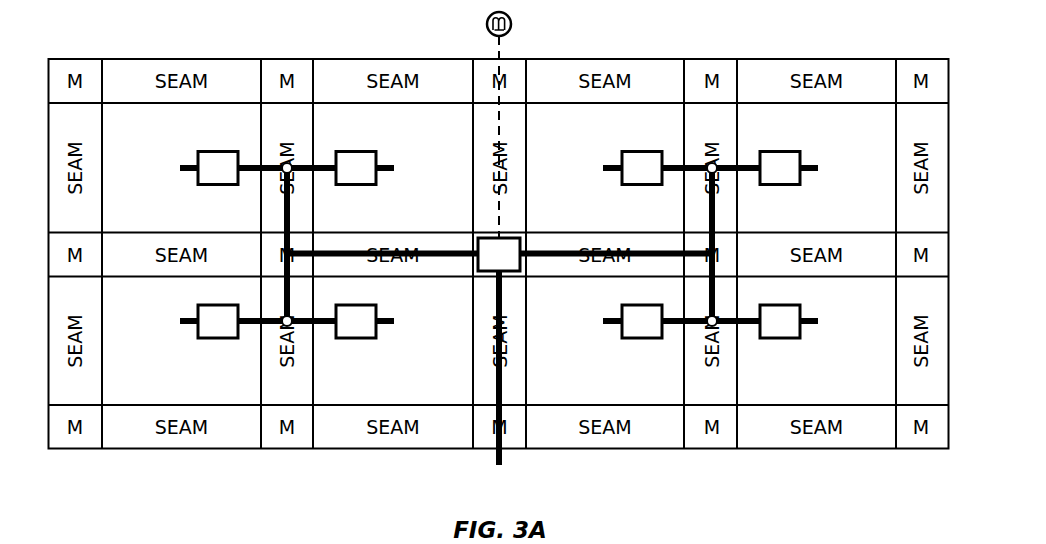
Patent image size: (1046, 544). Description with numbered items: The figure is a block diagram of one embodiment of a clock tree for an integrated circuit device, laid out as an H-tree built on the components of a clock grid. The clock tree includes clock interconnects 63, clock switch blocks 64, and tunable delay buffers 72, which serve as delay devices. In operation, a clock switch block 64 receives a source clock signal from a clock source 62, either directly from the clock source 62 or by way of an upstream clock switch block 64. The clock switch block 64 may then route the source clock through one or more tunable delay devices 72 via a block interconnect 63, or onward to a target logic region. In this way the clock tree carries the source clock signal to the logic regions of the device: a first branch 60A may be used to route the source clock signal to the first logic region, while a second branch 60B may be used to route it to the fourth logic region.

The first branch 60A is at (384, 362).
The second branch 60B is at (809, 362).
The clock source 62 is at (503, 12).
The clock interconnect 63 is at (247, 173).
The clock switch block 64 is at (218, 152).
The tunable delay buffer 72 is at (289, 163).